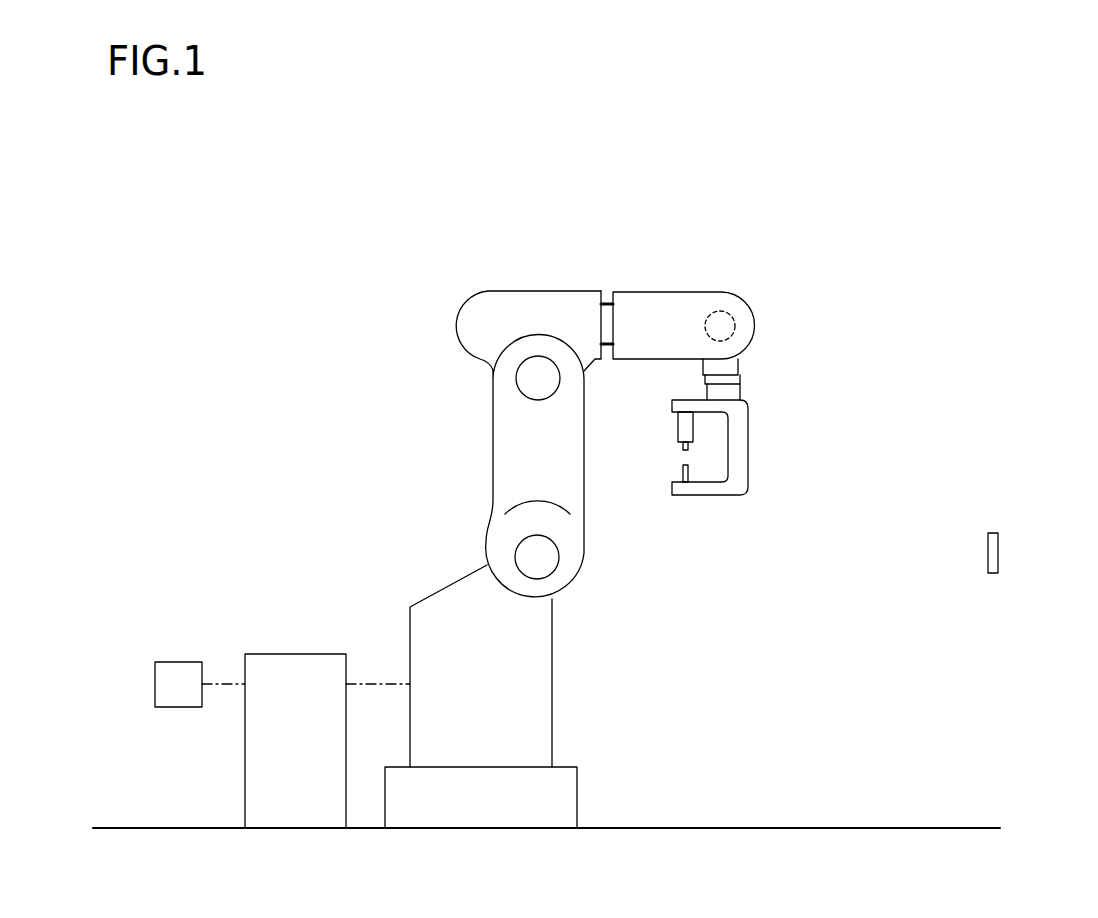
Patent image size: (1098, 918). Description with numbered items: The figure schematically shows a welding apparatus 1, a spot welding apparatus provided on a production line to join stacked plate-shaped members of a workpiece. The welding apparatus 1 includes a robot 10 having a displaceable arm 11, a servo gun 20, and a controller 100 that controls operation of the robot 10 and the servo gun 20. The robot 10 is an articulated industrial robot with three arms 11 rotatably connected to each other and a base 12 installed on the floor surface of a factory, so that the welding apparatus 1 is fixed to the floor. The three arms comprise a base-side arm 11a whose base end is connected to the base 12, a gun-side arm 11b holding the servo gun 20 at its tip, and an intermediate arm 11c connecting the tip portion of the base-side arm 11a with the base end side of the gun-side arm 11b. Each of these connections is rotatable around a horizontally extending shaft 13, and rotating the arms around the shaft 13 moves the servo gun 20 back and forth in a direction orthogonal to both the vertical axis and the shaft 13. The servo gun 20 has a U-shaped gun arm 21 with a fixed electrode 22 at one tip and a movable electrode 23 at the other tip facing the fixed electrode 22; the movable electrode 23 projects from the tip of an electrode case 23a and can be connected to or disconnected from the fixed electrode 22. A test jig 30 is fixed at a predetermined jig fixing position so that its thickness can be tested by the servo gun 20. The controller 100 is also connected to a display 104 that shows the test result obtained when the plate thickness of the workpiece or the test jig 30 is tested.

The welding apparatus 1 is at (900, 235).
The robot 10 is at (388, 338).
The arm 11 is at (608, 408).
The base-side arm 11a is at (518, 440).
The gun-side arm 11b is at (727, 364).
The intermediate arm 11c is at (580, 303).
The base 12 is at (532, 690).
The shaft 13 is at (718, 310).
The servo gun 20 is at (763, 450).
The gun arm 21 is at (740, 487).
The fixed electrode 22 is at (681, 475).
The movable electrode 23 is at (681, 447).
The electrode case 23a is at (683, 430).
The test jig 30 is at (999, 553).
The controller 100 is at (298, 668).
The display 104 is at (178, 672).